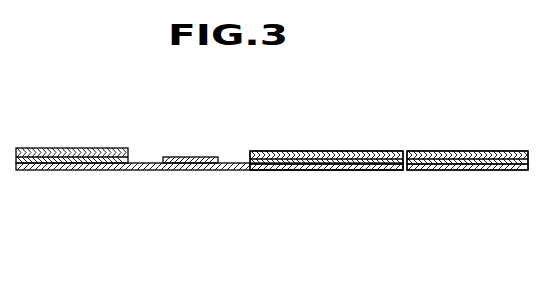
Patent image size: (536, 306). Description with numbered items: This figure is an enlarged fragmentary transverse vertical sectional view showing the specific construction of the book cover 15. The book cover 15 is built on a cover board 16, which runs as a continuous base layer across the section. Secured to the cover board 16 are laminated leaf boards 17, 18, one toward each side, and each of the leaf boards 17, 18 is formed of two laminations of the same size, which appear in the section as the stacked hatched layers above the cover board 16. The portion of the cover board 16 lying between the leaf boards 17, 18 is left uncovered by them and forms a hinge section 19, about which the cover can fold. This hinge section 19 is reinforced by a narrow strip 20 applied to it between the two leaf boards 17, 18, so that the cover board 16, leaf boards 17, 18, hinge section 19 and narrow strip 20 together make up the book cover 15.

The book cover 15 is at (315, 150).
The cover board 16 is at (377, 171).
The leaf board 17 is at (23, 148).
The leaf board 18 is at (372, 158).
The hinge section 19 is at (237, 172).
The narrow strip 20 is at (191, 156).